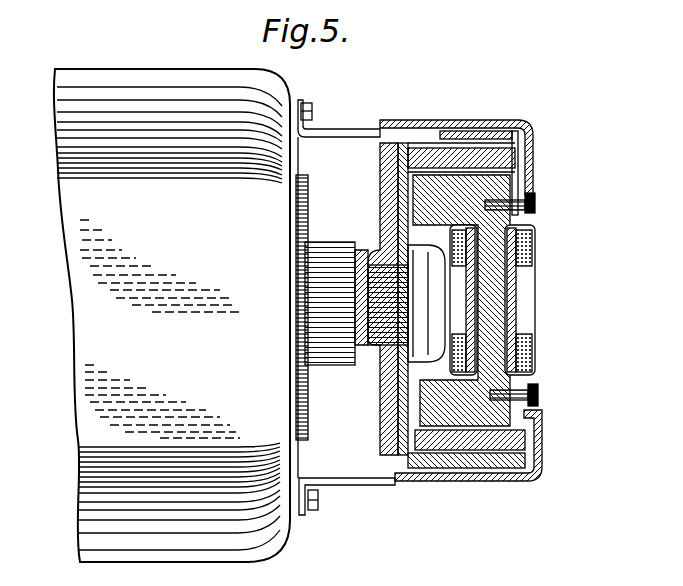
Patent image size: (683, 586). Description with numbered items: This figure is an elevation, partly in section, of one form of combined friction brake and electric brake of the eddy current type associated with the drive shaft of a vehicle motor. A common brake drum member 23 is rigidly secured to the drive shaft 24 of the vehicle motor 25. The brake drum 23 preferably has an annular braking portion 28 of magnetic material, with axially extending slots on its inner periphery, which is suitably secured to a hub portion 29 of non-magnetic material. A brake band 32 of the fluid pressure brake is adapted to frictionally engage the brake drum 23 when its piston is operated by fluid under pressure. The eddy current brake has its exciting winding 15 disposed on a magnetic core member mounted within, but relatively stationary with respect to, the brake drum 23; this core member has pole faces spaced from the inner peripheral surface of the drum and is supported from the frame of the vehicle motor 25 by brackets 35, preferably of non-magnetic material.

The exciting winding 15 is at (522, 302).
The brake drum member 23 is at (378, 157).
The drive shaft 24 is at (392, 313).
The vehicle motor 25 is at (172, 315).
The annular braking portion 28 is at (497, 156).
The hub portion 29 is at (380, 203).
The brake band 32 is at (484, 134).
The brackets 35 is at (457, 482).